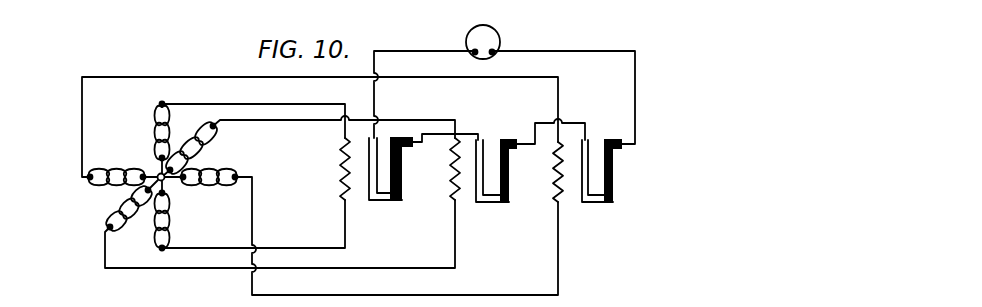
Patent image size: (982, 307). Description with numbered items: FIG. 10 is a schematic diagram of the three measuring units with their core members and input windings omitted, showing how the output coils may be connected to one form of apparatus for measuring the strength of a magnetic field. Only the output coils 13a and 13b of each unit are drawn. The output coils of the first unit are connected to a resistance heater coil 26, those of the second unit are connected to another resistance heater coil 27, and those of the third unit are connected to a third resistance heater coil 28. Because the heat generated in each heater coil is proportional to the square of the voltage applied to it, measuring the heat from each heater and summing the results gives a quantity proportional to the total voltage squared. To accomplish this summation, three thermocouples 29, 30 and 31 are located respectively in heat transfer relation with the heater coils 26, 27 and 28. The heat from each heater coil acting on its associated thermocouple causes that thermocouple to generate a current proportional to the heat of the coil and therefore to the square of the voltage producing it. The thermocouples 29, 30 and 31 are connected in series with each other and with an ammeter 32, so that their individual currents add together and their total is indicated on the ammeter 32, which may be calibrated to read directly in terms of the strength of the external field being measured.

The output coil 13a is at (151, 132).
The output coil 13b is at (208, 138).
The resistance heater coil 26 is at (342, 170).
The resistance heater coil 27 is at (450, 175).
The resistance heater coil 28 is at (553, 180).
The thermocouple 29 is at (373, 203).
The thermocouple 30 is at (481, 204).
The thermocouple 31 is at (594, 201).
The ammeter 32 is at (502, 35).